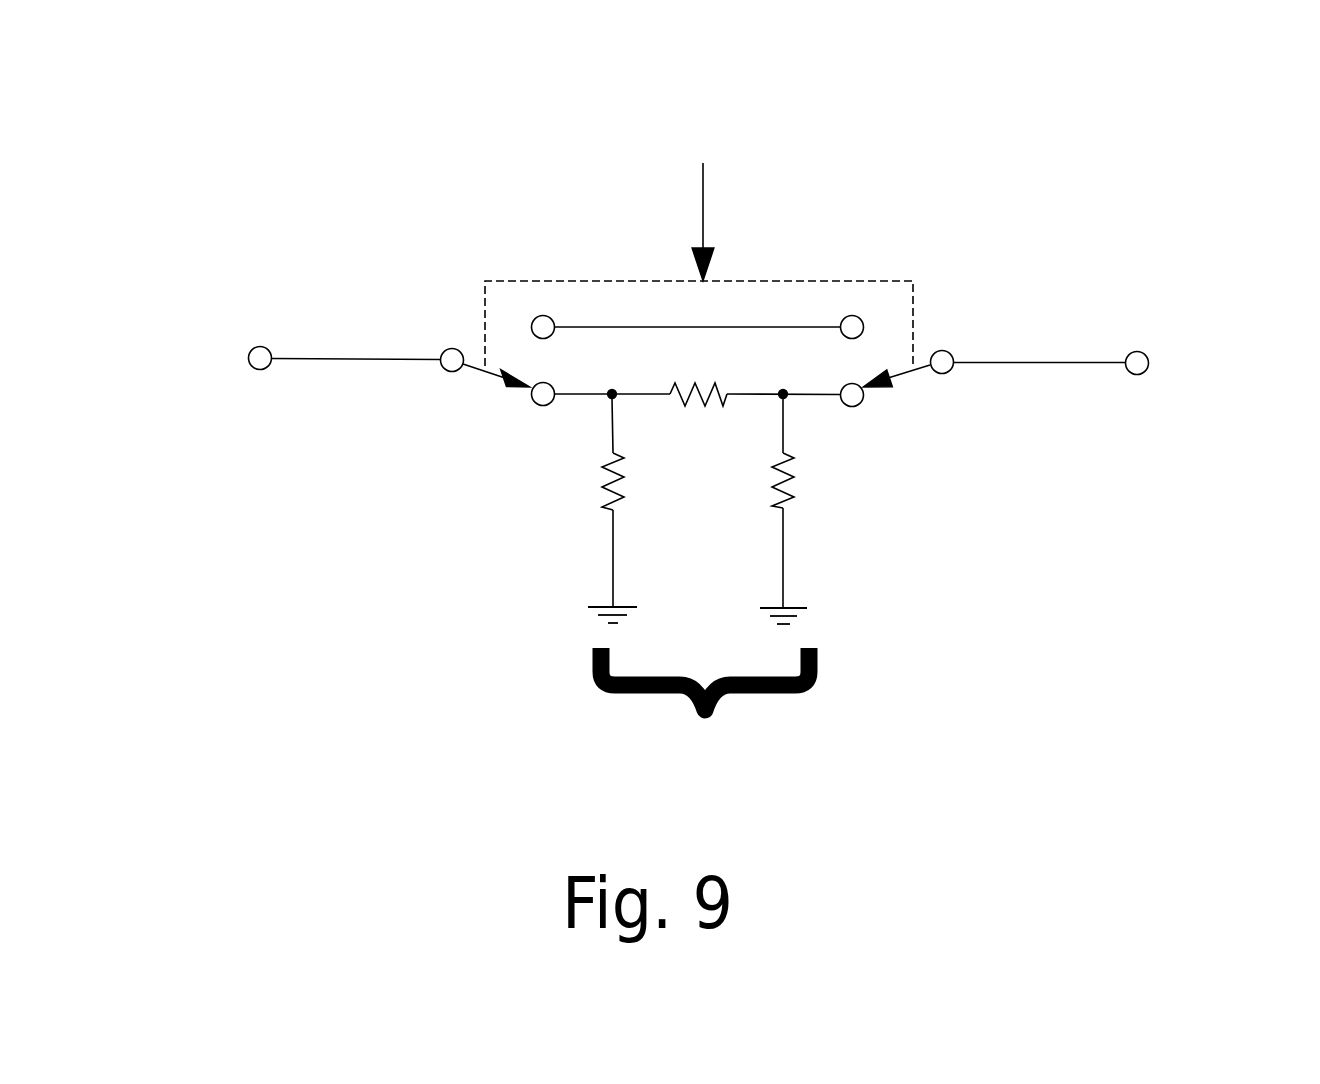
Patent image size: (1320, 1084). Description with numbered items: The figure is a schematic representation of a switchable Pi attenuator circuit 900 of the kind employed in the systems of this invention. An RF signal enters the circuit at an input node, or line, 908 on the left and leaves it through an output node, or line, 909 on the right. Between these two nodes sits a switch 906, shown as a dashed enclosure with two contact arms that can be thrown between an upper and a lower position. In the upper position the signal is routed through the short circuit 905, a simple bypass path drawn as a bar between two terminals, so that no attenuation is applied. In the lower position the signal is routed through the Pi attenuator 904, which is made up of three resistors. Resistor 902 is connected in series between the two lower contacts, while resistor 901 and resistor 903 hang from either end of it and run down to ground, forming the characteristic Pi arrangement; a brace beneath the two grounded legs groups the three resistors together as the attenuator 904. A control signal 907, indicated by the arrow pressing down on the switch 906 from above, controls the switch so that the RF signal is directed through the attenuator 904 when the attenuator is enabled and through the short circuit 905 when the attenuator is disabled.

The switch circuit 900 is at (886, 216).
The resistor 901 is at (607, 533).
The resistor 902 is at (691, 406).
The resistor 903 is at (793, 530).
The Pi attenuator 904 is at (686, 583).
The short circuit 905 is at (622, 325).
The switch 906 is at (484, 366).
The control signal 907 is at (703, 207).
The input node 908 is at (252, 351).
The output node 909 is at (1149, 362).